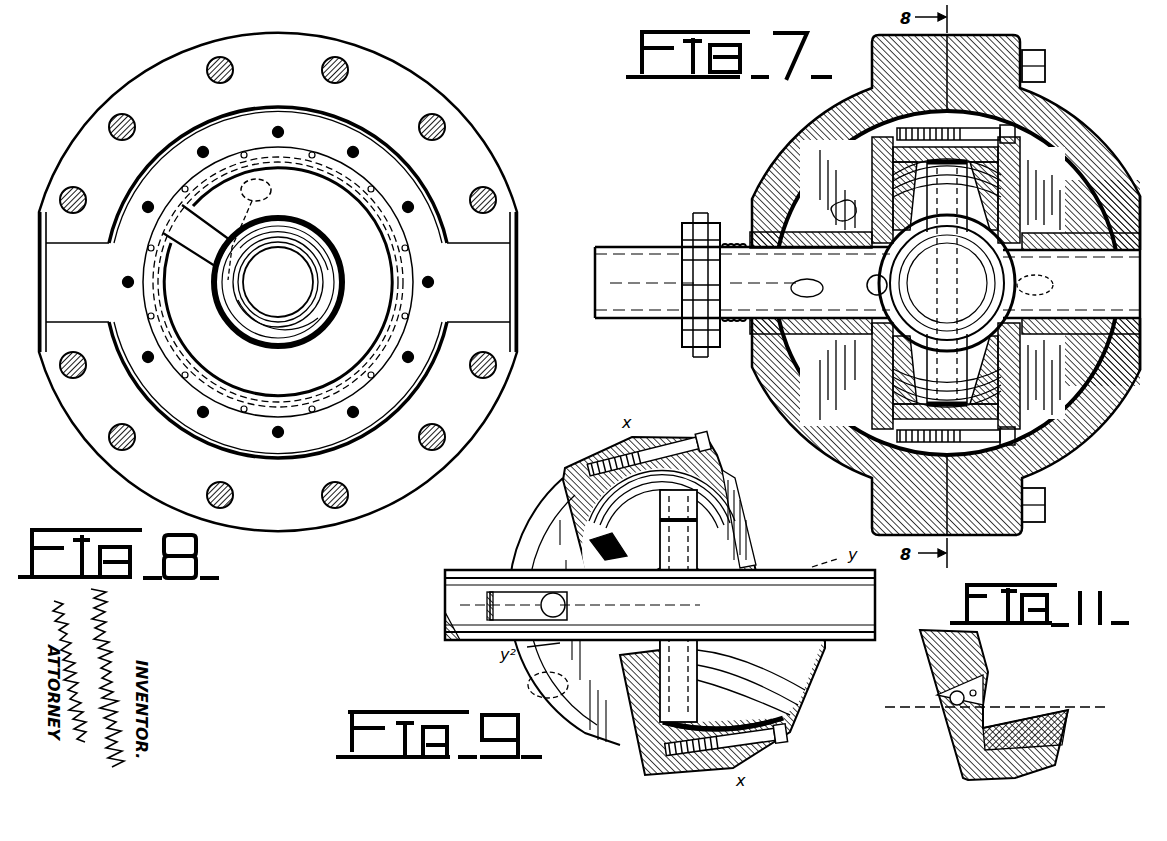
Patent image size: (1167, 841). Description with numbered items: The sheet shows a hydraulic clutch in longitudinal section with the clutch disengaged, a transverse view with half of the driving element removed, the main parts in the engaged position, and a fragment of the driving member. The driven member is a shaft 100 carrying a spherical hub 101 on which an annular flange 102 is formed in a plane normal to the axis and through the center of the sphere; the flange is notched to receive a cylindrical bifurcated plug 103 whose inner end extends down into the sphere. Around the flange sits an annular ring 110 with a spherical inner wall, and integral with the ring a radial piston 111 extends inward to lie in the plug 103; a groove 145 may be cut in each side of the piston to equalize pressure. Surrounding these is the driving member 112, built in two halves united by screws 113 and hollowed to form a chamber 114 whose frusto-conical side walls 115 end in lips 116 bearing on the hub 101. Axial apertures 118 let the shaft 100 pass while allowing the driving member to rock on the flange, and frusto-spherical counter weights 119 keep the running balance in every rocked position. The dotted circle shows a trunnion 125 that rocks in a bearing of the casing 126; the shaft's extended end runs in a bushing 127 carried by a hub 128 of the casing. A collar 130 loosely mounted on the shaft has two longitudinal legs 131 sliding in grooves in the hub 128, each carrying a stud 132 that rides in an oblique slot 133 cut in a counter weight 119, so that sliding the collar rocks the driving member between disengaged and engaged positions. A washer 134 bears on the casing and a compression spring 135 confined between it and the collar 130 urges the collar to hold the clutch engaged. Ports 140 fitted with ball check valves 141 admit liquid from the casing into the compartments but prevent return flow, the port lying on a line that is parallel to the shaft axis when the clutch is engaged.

In FIG. 8, the shaft 100 is at (288, 264).
In FIG. 7, the shaft 100 is at (643, 262).
In FIG. 9, the shaft 100 is at (878, 602).
In FIG. 8, the spherical hub 101 is at (296, 232).
In FIG. 7, the spherical hub 101 is at (947, 283).
In FIG. 9, the spherical hub 101 is at (697, 599).
In FIG. 8, the annular flange 102 is at (378, 272).
In FIG. 7, the annular flange 102 is at (893, 190).
In FIG. 9, the annular flange 102 is at (768, 478).
In FIG. 8, the cylindrical bifurcated plug 103 is at (251, 229).
In FIG. 7, the cylindrical bifurcated plug 103 is at (947, 283).
In FIG. 9, the cylindrical bifurcated plug 103 is at (720, 558).
In FIG. 7, the annular ring 110 is at (883, 407).
In FIG. 9, the annular ring 110 is at (660, 745).
In FIG. 8, the piston 111 is at (203, 240).
In FIG. 7, the piston 111 is at (841, 215).
In FIG. 9, the piston 111 is at (641, 600).
In FIG. 8, the driving member 112 is at (389, 172).
In FIG. 7, the driving member 112 is at (880, 133).
In FIG. 9, the driving member 112 is at (672, 440).
In FIG. 8, the screws 113 is at (284, 128).
In FIG. 7, the screws 113 is at (1017, 537).
In FIG. 9, the screws 113 is at (612, 452).
In FIG. 9, the chamber 114 is at (585, 480).
In FIG. 9, the side walls 115 is at (580, 520).
In FIG. 7, the lips 116 is at (783, 393).
In FIG. 9, the lips 116 is at (787, 660).
In FIG. 7, the axial apertures 118 is at (755, 353).
In FIG. 7, the counter weights 119 is at (830, 193).
In FIG. 9, the counter weights 119 is at (798, 523).
In FIG. 8, the trunnion 125 is at (72, 254).
In FIG. 7, the trunnion 125 is at (1035, 285).
In FIG. 7, the casing 126 is at (1053, 150).
In FIG. 7, the bushing 127 is at (1077, 217).
In FIG. 7, the hub 128 is at (797, 373).
In FIG. 7, the collar 130 is at (688, 221).
In FIG. 7, the legs 131 is at (782, 230).
In FIG. 9, the legs 131 is at (483, 643).
In FIG. 7, the stud 132 is at (866, 287).
In FIG. 9, the stud 132 is at (553, 605).
In FIG. 7, the oblique slots 133 is at (808, 287).
In FIG. 9, the oblique slots 133 is at (565, 640).
In FIG. 7, the washer 134 is at (750, 333).
In FIG. 7, the compression spring 135 is at (737, 244).
In FIG. 11, the ports 140 is at (950, 698).
In FIG. 11, the ball check valves 141 is at (985, 700).
In FIG. 9, the groove 145 is at (587, 543).